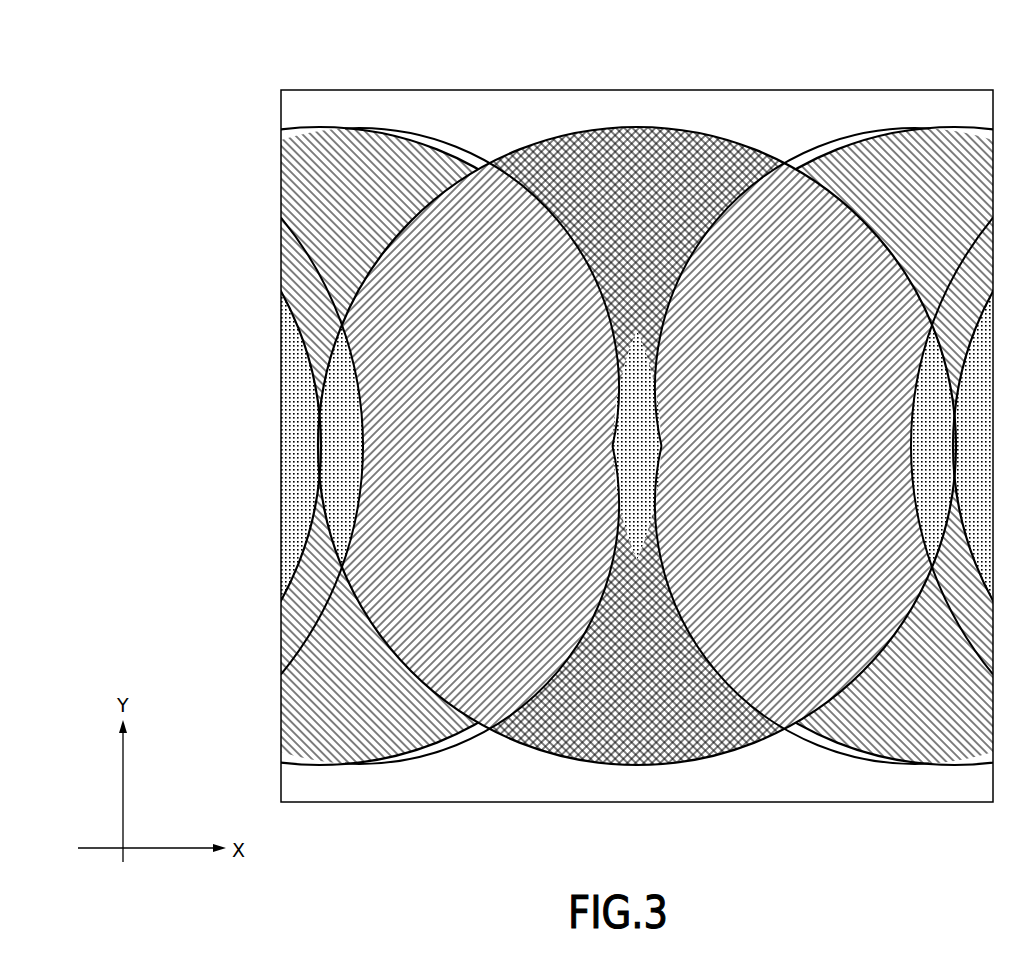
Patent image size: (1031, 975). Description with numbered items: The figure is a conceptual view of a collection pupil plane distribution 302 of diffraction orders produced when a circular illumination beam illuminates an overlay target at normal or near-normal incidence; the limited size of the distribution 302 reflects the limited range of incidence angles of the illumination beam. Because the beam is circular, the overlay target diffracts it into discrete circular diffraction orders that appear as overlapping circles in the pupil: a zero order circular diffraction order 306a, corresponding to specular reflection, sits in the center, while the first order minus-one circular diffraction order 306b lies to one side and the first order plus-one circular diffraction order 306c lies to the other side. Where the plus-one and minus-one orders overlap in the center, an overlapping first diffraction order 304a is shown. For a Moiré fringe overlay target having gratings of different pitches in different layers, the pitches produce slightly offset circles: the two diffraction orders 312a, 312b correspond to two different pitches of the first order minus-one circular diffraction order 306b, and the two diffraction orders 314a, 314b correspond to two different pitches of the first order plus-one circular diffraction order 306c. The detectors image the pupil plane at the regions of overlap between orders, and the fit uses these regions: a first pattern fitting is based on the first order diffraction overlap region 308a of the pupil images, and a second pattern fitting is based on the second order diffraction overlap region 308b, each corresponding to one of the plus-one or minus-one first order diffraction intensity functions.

The collection pupil plane distribution 302 is at (260, 32).
The overlapping first diffraction order 304a is at (632, 287).
The zero order circular diffraction order 306a is at (517, 147).
The first order (−1) circular diffraction order 306b is at (322, 127).
The first order (+1) circular diffraction order 306c is at (950, 127).
The first order diffraction overlap region 308a is at (482, 183).
The second order diffraction overlap region 308b is at (793, 185).
The diffraction order 312a is at (562, 237).
The diffraction order 312b is at (618, 273).
The diffraction order 314a is at (747, 183).
The diffraction order 314b is at (708, 235).